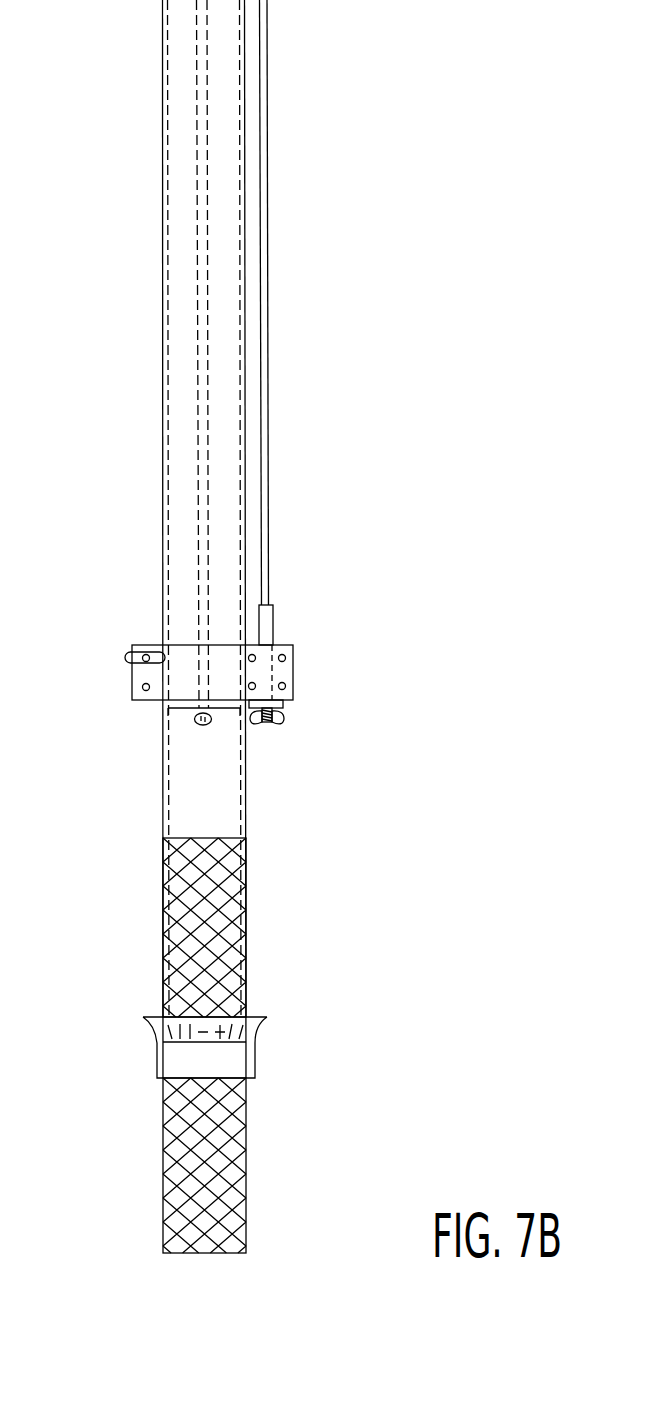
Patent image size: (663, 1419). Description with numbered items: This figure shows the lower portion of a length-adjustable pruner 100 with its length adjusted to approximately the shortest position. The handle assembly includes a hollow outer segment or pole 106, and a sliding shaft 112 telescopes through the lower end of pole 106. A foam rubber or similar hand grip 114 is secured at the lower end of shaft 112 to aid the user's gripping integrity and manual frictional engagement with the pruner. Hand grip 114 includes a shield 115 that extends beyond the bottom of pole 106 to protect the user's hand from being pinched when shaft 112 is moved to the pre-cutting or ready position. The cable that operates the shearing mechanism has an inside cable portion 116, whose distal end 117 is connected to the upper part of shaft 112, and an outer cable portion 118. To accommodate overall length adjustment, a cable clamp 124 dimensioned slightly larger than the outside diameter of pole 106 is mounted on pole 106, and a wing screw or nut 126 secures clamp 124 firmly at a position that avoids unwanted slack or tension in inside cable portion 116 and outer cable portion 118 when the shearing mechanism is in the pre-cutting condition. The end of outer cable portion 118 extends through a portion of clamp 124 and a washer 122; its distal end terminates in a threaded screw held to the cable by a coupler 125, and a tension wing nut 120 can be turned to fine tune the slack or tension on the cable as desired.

The pruner 100 is at (318, 98).
The hollow outer segment or pole 106 is at (177, 437).
The inside cable portion 116 is at (198, 243).
The outer cable portion 118 is at (268, 350).
The coupler 125 is at (273, 622).
The cable clamp 124 is at (302, 651).
The wing screw or nut 126 is at (128, 658).
The washer 122 is at (283, 704).
The tension wing nut 120 is at (277, 735).
The distal end of inside cable portion 117 is at (199, 726).
The sliding shaft 112 is at (227, 932).
The shield 115 is at (158, 1047).
The hand grip 114 is at (228, 1143).